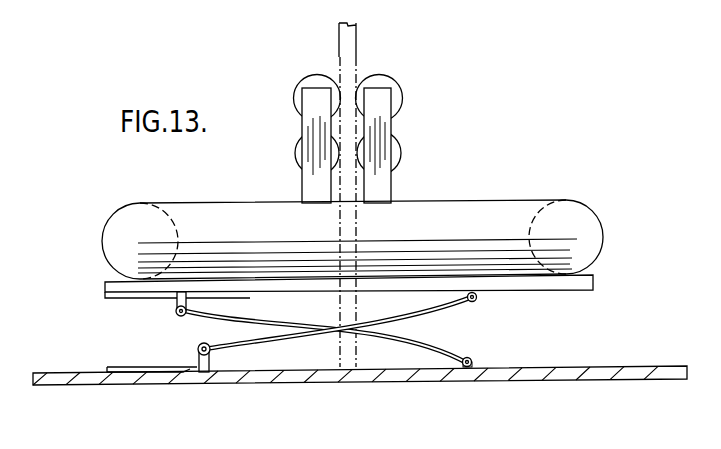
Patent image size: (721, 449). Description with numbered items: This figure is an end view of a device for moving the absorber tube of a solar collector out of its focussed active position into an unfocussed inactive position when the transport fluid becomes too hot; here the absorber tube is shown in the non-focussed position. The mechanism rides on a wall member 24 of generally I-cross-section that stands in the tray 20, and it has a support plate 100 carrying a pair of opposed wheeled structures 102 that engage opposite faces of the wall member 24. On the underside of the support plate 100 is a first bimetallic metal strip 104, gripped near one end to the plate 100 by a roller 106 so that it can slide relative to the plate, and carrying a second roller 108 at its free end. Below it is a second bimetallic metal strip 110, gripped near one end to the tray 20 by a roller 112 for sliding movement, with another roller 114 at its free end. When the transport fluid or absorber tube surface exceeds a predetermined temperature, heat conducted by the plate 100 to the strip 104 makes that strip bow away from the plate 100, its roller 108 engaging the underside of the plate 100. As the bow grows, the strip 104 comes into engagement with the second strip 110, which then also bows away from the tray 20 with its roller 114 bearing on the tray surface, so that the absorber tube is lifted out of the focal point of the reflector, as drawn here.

The tray 20 is at (620, 371).
The wall member 24 is at (338, 43).
The support plate 100 is at (597, 280).
The wheeled structures 102 is at (402, 96).
The first bimetallic metal strip 104 is at (448, 308).
The roller 106 is at (178, 316).
The second roller 108 is at (478, 299).
The second bimetallic metal strip 110 is at (277, 343).
The roller 112 is at (197, 352).
The roller 114 is at (473, 361).